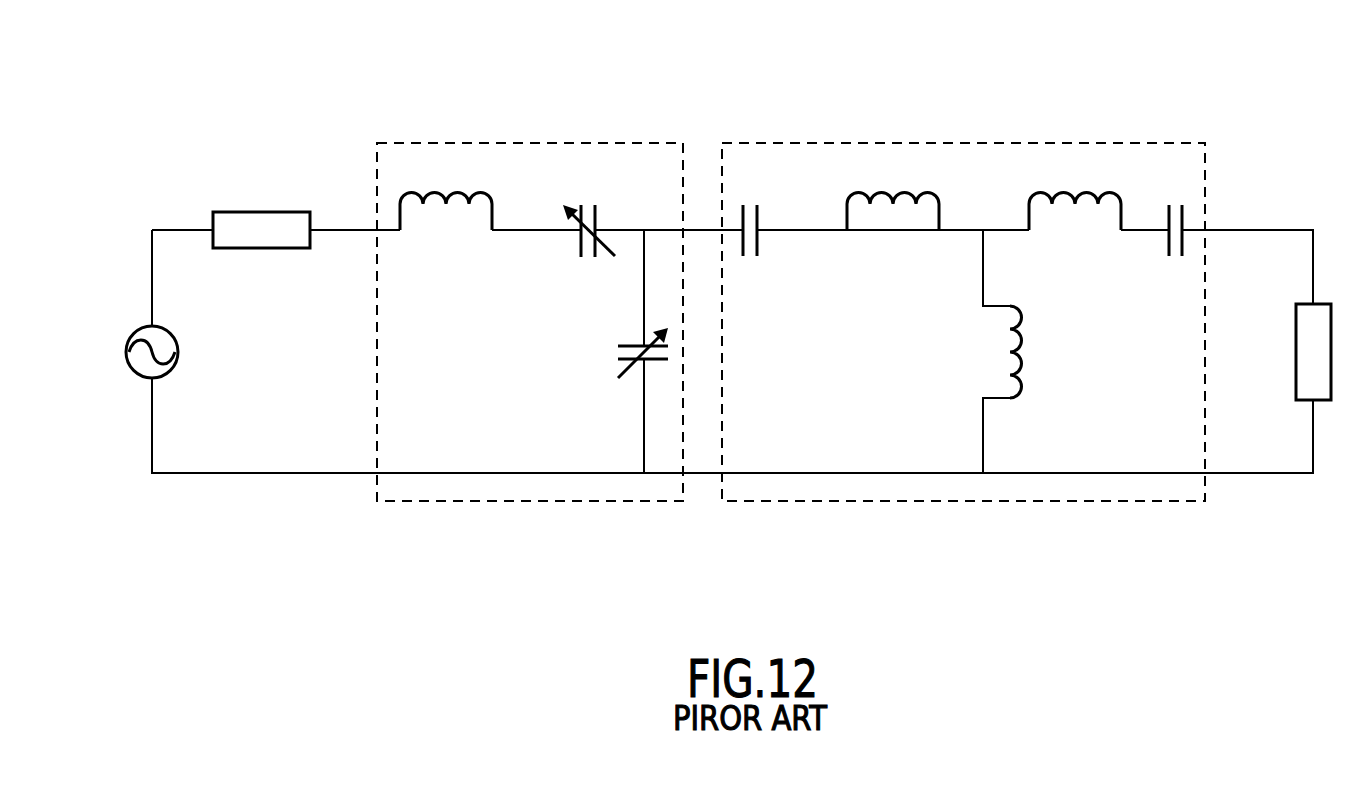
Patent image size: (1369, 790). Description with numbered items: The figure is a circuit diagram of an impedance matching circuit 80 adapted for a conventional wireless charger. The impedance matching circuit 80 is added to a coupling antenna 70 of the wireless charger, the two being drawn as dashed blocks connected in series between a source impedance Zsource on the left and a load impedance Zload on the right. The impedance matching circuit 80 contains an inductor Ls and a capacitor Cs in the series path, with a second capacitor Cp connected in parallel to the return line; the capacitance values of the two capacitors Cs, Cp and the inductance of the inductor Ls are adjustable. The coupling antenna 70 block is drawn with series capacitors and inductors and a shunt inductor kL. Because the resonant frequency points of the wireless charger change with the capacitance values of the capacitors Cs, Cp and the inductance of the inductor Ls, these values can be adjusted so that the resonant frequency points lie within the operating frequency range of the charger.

The impedance matching circuit 80 is at (530, 279).
The coupling antenna 70 is at (963, 280).
The inductor Ls is at (446, 193).
The capacitor Cs is at (589, 211).
The capacitor Cp is at (625, 353).
The coupling inductor kL is at (1036, 352).
The source impedance Zsource is at (223, 295).
The load impedance Zload is at (1274, 370).